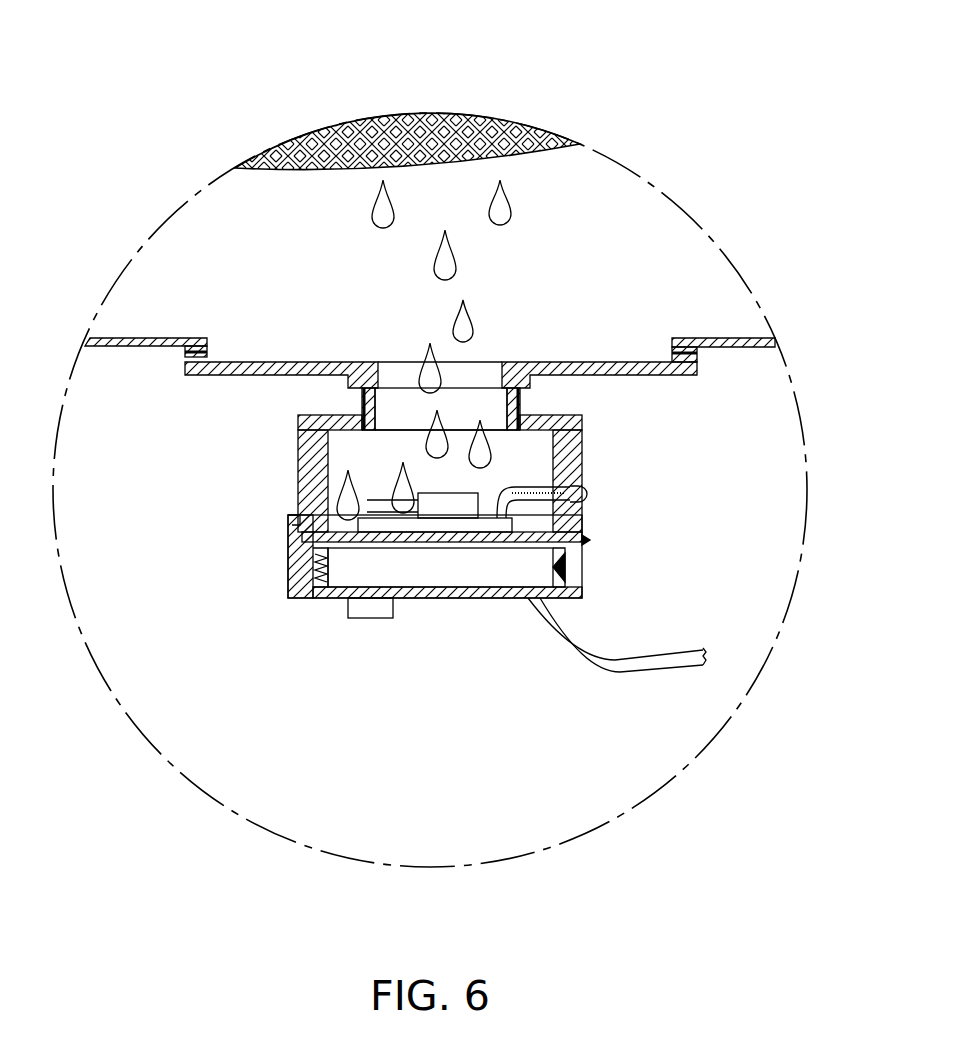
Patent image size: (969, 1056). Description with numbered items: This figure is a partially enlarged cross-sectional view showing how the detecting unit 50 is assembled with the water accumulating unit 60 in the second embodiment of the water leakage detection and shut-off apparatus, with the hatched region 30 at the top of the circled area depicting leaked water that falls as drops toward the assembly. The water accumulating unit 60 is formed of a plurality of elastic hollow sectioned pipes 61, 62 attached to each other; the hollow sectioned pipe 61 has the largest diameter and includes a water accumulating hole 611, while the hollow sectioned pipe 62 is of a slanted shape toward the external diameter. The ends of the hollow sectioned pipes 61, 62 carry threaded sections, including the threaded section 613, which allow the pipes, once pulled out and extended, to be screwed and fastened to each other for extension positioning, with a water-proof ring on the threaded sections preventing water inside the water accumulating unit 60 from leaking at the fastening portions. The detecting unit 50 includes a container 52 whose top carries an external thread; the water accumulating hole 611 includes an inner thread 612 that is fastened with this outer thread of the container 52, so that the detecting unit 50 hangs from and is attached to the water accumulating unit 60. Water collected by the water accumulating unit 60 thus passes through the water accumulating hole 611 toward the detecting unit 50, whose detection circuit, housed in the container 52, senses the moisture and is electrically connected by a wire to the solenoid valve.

The water 30 is at (410, 126).
The detecting unit 50 is at (421, 619).
The container 52 is at (310, 484).
The water accumulating unit 60 is at (182, 398).
The hollow sectioned pipe 61 is at (245, 372).
The hollow sectioned pipe 62 is at (112, 347).
The water accumulating hole 611 is at (475, 380).
The inner thread 612 is at (522, 401).
The threaded section 613 is at (690, 340).